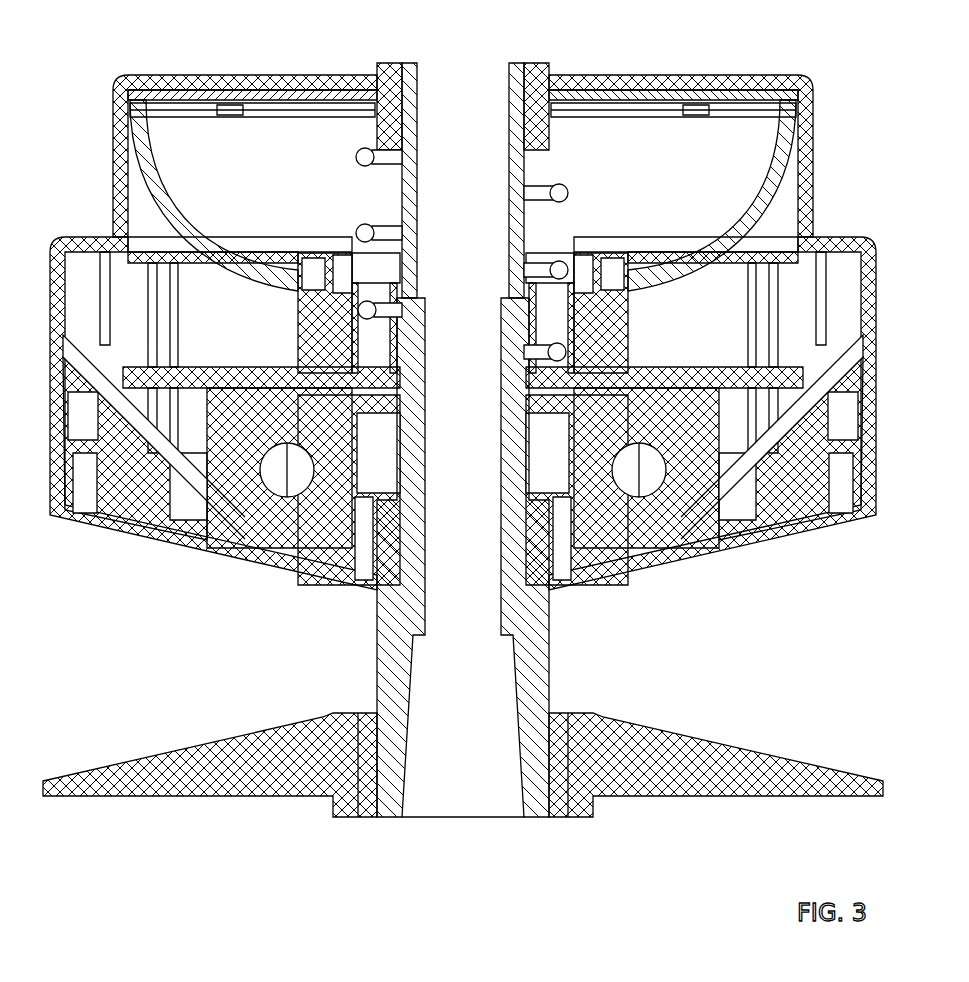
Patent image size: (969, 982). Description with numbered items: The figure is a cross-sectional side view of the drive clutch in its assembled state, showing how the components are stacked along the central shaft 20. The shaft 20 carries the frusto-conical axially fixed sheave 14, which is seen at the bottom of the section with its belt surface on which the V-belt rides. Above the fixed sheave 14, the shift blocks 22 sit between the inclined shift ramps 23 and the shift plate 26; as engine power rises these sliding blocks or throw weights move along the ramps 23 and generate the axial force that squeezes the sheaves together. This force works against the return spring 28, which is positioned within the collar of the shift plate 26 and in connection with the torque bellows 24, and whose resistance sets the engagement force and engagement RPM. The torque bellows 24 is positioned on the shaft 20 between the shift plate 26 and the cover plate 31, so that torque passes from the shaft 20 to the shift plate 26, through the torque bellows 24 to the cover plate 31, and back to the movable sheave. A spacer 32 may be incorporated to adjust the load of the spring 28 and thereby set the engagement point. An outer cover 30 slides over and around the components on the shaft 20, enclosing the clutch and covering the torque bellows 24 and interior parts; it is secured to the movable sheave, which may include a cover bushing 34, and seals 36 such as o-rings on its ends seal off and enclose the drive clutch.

The fixed sheave 14 is at (652, 767).
The shaft 20 is at (463, 783).
The shift blocks 22 is at (257, 527).
The shift ramps 23 is at (167, 467).
The torque bellows 24 is at (722, 183).
The shift plate 26 is at (775, 295).
The return spring 28 is at (550, 188).
The outer cover 30 is at (802, 147).
The cover plate 31 is at (725, 100).
The spacer 32 is at (612, 248).
The cover bushing 34 is at (461, 75).
The seals 36 is at (365, 75).